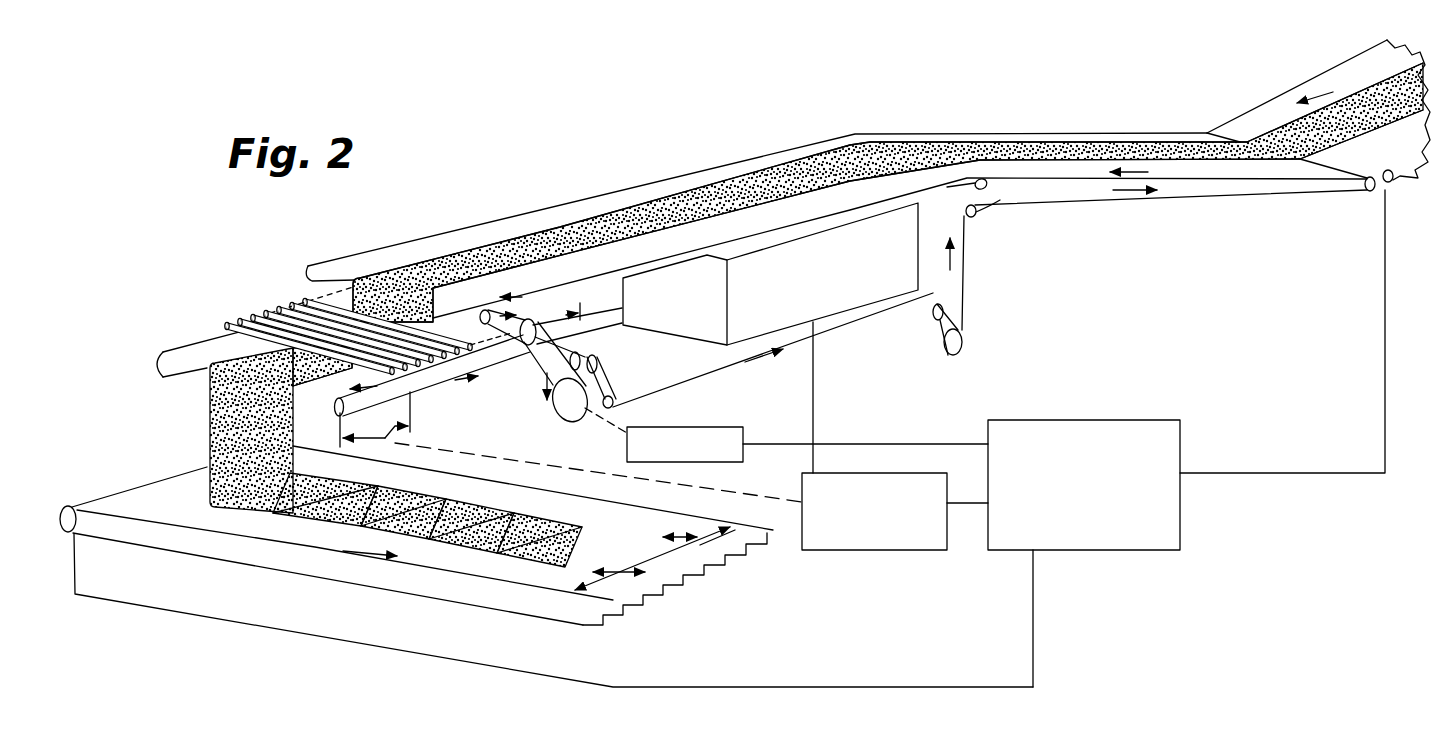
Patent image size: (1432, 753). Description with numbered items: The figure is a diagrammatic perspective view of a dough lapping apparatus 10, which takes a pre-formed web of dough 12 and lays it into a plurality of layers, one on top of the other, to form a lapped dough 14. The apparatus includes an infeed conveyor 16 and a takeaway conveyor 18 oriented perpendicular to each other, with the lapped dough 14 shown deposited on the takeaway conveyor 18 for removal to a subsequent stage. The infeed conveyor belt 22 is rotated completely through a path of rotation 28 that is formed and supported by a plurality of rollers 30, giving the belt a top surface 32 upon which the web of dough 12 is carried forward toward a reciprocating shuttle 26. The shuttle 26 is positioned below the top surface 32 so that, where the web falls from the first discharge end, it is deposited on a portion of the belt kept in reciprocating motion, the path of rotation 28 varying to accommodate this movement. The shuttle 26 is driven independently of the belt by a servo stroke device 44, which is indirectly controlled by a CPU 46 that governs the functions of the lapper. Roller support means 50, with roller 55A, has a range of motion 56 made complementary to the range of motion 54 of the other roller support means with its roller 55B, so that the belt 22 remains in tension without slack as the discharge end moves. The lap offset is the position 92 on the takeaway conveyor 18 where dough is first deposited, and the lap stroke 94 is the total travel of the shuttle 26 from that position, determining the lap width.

The dough lapping apparatus 10 is at (588, 160).
The web of dough 12 is at (1095, 150).
The lapped dough 14 is at (338, 520).
The infeed conveyor 16 is at (642, 176).
The takeaway conveyor 18 is at (230, 572).
The infeed conveyor belt 22 is at (797, 148).
The reciprocating shuttle 26 is at (452, 410).
The path of rotation 28 is at (838, 324).
The rollers 30 is at (987, 179).
The top surface 32 is at (363, 262).
The servo stroke device 44 is at (875, 551).
The central processing unit (CPU) 46 is at (1108, 551).
The roller support means 50 is at (266, 307).
The range of motion 54 is at (572, 447).
The roller 55A is at (527, 342).
The roller 55B is at (321, 432).
The range of motion 56 is at (576, 322).
The lap offset position 92 is at (723, 538).
The lap stroke 94 is at (673, 567).